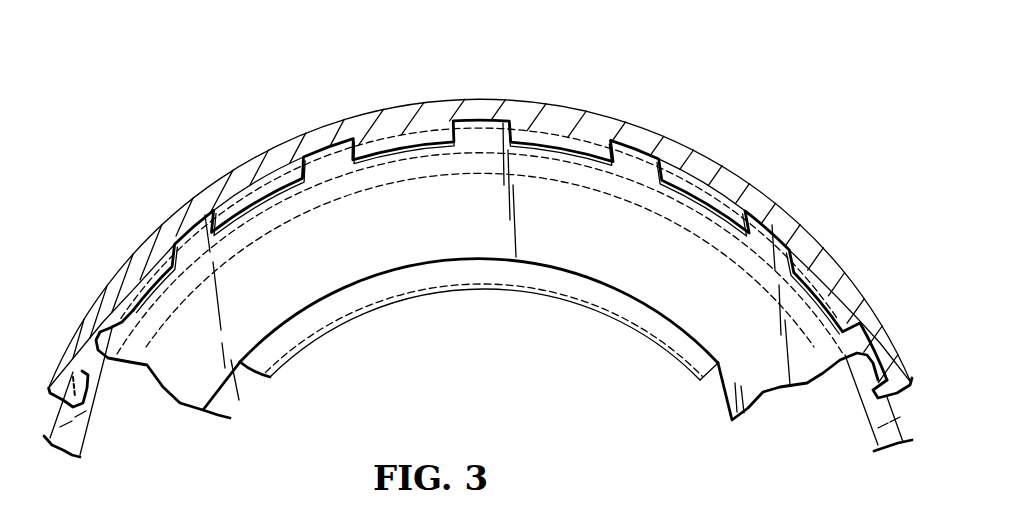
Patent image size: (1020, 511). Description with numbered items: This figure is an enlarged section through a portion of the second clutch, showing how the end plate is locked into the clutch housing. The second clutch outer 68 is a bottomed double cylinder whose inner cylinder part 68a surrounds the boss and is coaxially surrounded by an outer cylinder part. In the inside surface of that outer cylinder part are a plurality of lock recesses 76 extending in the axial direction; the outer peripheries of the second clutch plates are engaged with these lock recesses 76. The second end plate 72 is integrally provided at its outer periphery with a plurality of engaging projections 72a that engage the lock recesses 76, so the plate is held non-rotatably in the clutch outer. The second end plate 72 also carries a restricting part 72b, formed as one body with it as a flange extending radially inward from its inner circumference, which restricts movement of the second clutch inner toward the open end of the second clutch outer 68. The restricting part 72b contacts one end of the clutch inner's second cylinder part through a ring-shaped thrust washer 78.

The second clutch outer 68 is at (532, 95).
The inner cylinder part 68a is at (578, 112).
The lock recesses 76 is at (471, 122).
The second end plate 72 is at (628, 282).
The engaging projections 72a is at (767, 200).
The restricting part 72b is at (724, 400).
The thrust washer 78 is at (383, 290).